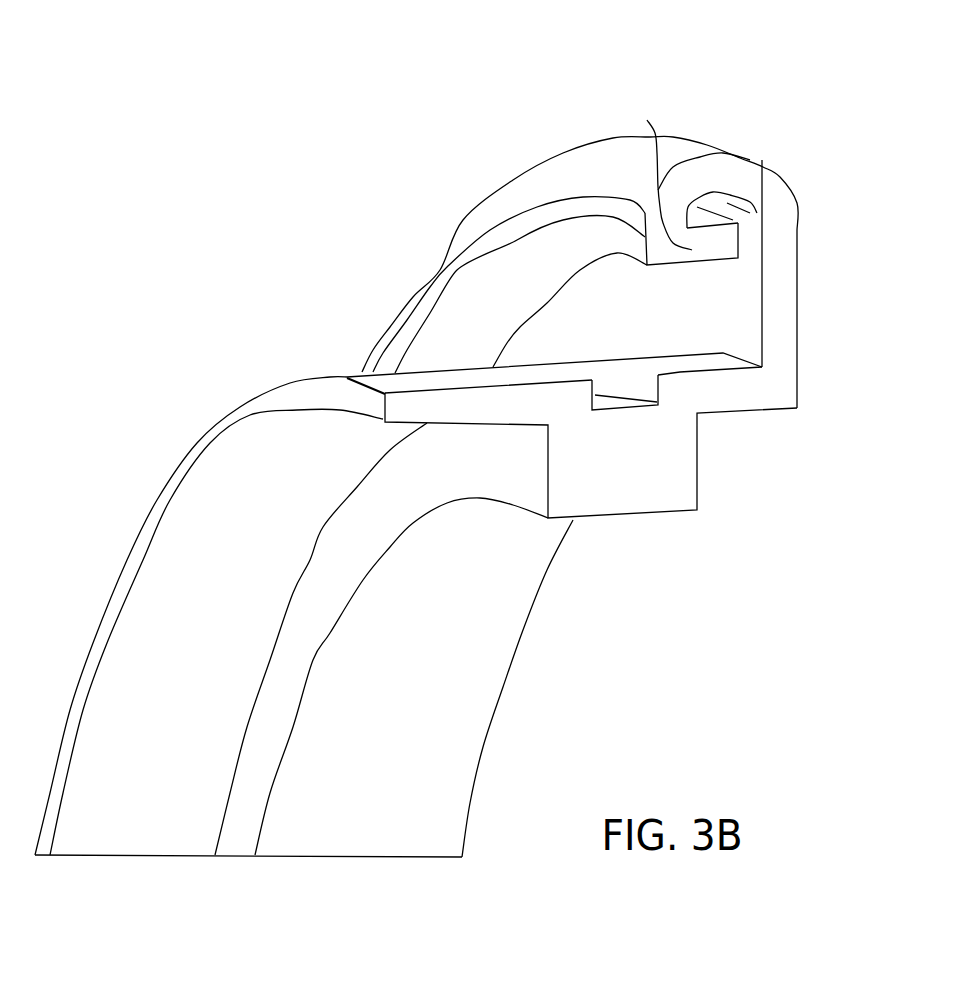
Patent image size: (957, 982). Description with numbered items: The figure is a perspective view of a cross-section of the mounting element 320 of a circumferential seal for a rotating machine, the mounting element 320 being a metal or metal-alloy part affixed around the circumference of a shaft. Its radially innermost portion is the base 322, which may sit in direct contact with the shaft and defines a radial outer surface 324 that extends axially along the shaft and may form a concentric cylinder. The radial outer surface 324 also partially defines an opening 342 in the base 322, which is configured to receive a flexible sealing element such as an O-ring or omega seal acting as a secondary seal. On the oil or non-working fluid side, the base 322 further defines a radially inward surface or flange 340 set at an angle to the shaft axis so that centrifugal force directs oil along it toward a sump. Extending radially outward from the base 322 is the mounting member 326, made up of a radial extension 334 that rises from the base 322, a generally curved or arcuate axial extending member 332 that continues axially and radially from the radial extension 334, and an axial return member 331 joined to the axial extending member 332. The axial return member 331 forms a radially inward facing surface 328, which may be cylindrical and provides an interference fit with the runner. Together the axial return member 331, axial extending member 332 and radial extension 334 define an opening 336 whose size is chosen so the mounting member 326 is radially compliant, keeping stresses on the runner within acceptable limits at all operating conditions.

The mounting element 320 is at (248, 176).
The base 322 is at (614, 474).
The radial outer surface 324 is at (395, 383).
The mounting member 326 is at (844, 201).
The radially inward facing surface 328 is at (703, 272).
The axial return member 331 is at (647, 120).
The axial extending member 332 is at (712, 177).
The radial extension 334 is at (775, 280).
The opening 336 is at (762, 160).
The radially inward surface or flange 340 is at (188, 608).
The opening 342 is at (609, 393).